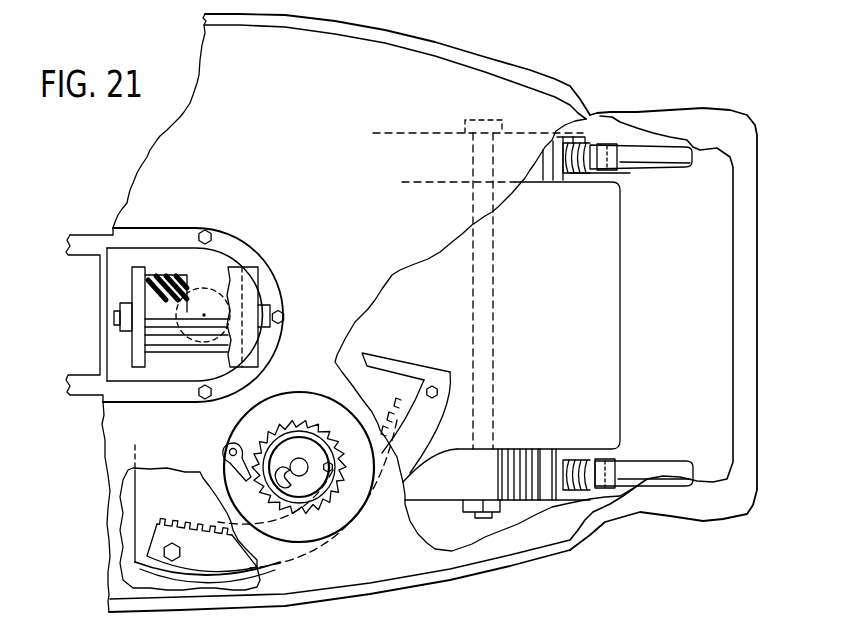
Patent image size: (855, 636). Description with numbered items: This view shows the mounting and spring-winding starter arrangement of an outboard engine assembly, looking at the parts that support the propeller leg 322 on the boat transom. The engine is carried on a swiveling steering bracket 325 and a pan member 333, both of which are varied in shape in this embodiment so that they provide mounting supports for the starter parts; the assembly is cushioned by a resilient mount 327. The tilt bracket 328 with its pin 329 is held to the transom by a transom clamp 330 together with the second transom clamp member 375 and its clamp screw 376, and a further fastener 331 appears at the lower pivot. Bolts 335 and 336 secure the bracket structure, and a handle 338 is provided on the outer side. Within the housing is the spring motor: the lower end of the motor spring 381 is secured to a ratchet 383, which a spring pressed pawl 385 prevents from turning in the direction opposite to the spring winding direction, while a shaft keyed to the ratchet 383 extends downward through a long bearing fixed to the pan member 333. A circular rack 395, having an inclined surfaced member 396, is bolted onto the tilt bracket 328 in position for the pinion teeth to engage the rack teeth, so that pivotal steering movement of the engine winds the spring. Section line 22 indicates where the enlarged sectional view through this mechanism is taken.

The section line 22- 22 is at (248, 389).
The propeller leg 322 is at (218, 311).
The swiveling steering bracket 325 is at (110, 294).
The resilient mount 327 is at (185, 280).
The tilt bracket 328 is at (560, 295).
The pin 329 is at (490, 518).
The transom clamp 330 is at (436, 488).
The lower pivot pin 331 is at (644, 459).
The pan member 333 is at (305, 169).
The bolt 335 is at (206, 230).
The bolt 336 is at (200, 396).
The handle 338 is at (733, 327).
The second transom clamp member 375 is at (544, 181).
The clamp screw 376 is at (622, 175).
The motor spring 381 is at (330, 446).
The ratchet 383 is at (327, 421).
The spring pressed pawl 385 is at (224, 449).
The circular rack 395 is at (207, 523).
The inclined surfaced member 396 is at (406, 352).